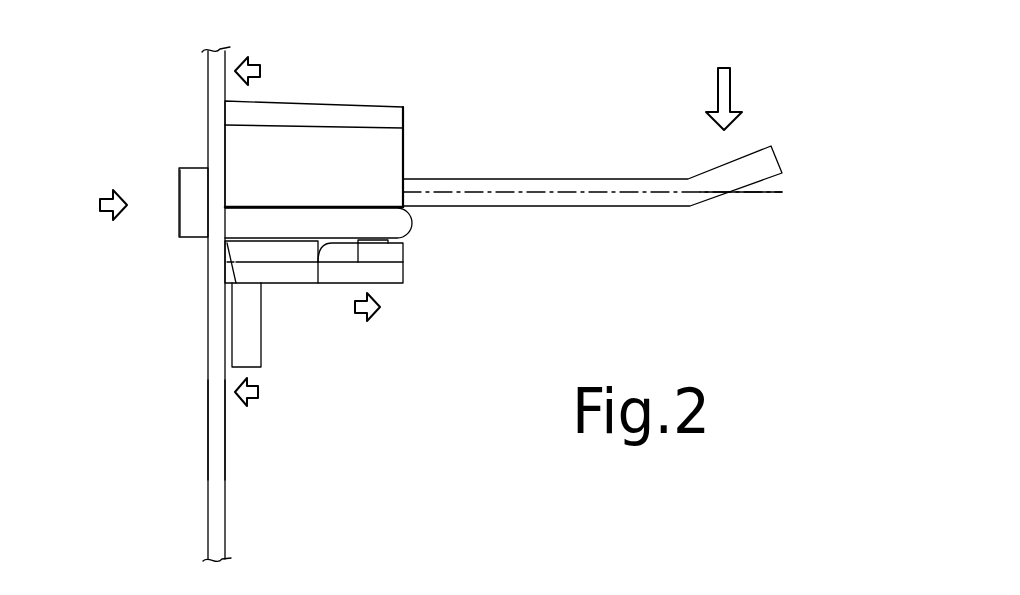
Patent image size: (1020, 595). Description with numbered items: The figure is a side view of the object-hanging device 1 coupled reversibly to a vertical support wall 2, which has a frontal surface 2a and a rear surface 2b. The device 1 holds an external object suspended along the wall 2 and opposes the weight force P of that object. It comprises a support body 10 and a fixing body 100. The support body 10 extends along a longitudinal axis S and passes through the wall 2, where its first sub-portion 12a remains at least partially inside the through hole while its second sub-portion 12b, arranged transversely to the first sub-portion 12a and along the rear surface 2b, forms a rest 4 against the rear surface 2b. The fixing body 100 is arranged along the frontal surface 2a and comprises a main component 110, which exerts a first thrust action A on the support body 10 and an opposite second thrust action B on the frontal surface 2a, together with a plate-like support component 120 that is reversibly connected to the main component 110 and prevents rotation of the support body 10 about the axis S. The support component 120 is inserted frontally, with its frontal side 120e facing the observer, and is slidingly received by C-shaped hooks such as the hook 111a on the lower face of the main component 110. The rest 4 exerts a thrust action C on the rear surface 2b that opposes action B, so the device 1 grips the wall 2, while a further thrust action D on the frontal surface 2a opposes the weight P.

The object-hanging device 1 is at (503, 258).
The support wall 2 is at (217, 547).
The frontal surface 2a is at (220, 486).
The rear surface 2b is at (215, 522).
The rest 4 is at (208, 217).
The support body 10 is at (533, 165).
The first sub-portion 12a is at (363, 222).
The second sub-portion 12b is at (196, 183).
The fixing body 100 is at (385, 258).
The main component 110 is at (365, 95).
The hook 111a is at (295, 273).
The support component 120 is at (345, 372).
The frontal side 120e is at (417, 263).
The first thrust action A is at (355, 324).
The second thrust action B is at (250, 57).
The thrust action C is at (110, 190).
The further thrust action D is at (248, 409).
The weight force P is at (722, 65).
The longitudinal axis S is at (768, 193).